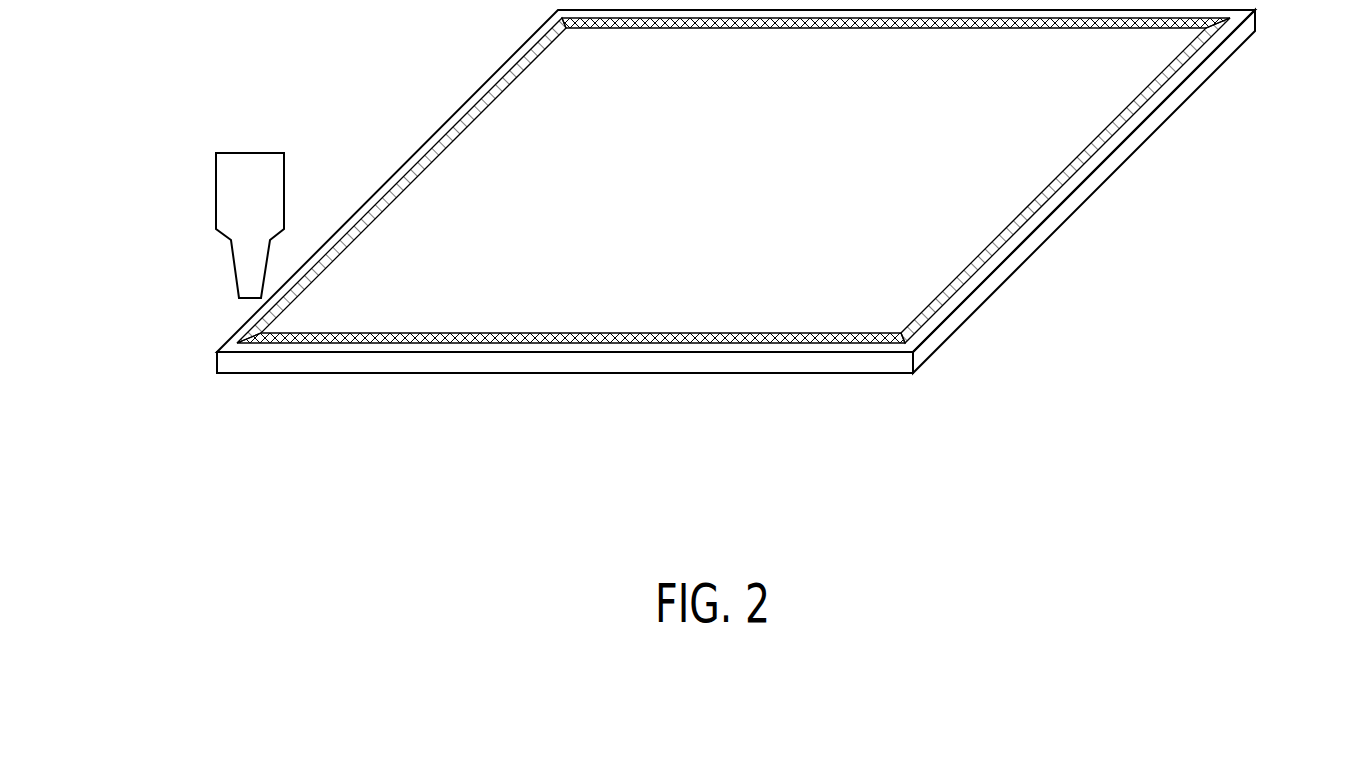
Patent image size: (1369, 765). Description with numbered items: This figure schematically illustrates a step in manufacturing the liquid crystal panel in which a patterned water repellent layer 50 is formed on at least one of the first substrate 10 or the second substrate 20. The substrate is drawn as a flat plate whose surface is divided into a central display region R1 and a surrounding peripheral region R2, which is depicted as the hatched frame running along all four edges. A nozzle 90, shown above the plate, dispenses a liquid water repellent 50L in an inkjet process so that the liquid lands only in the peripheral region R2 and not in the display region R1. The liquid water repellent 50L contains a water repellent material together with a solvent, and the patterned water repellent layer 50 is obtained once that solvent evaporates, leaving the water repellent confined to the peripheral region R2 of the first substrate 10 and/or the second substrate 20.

The first substrate 10 is at (768, 191).
The second substrate 20 is at (1087, 190).
The patterned water repellent layer 50 is at (797, 180).
The liquid water repellent 50L is at (1100, 131).
The nozzle 90 is at (233, 193).
The display region R1 is at (402, 300).
The peripheral region R2 is at (535, 345).